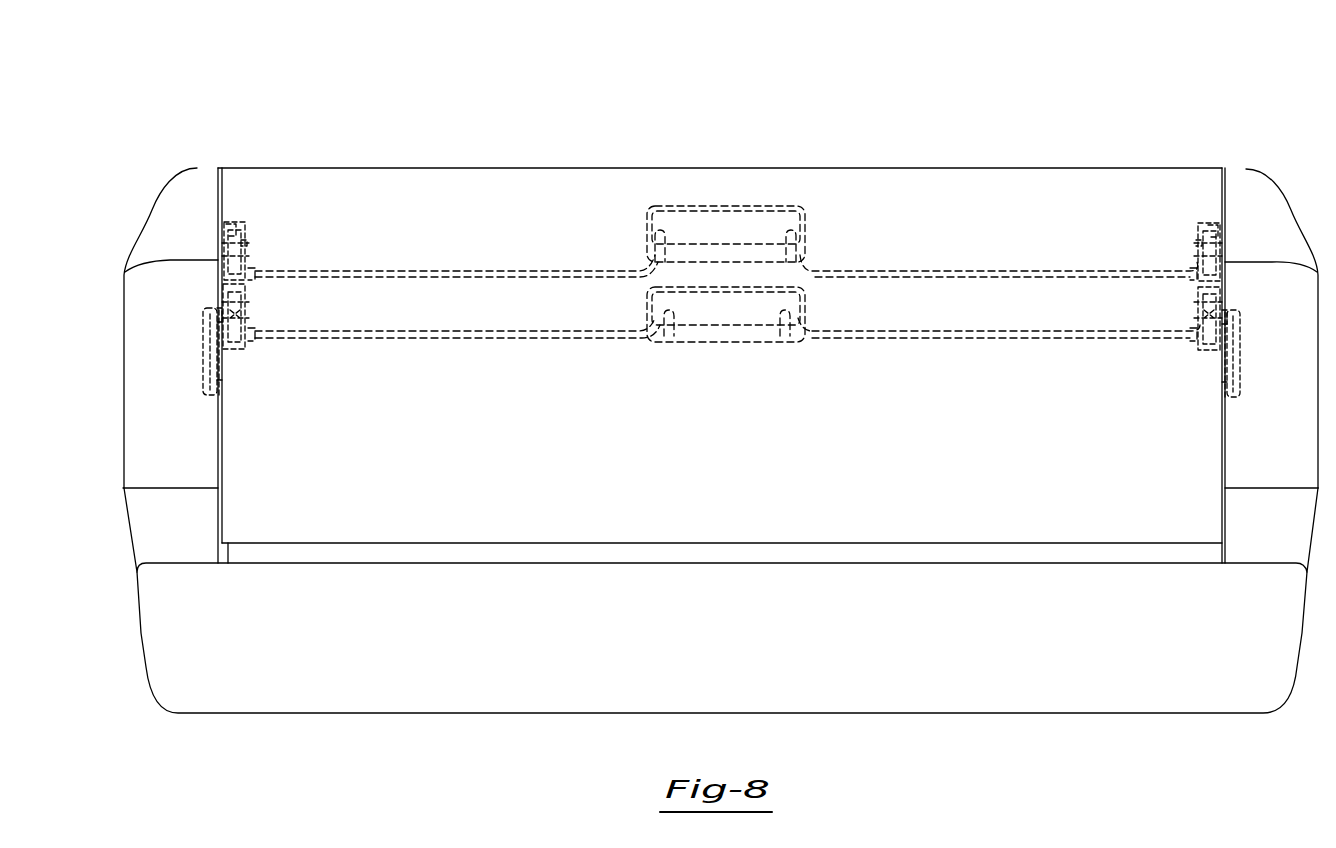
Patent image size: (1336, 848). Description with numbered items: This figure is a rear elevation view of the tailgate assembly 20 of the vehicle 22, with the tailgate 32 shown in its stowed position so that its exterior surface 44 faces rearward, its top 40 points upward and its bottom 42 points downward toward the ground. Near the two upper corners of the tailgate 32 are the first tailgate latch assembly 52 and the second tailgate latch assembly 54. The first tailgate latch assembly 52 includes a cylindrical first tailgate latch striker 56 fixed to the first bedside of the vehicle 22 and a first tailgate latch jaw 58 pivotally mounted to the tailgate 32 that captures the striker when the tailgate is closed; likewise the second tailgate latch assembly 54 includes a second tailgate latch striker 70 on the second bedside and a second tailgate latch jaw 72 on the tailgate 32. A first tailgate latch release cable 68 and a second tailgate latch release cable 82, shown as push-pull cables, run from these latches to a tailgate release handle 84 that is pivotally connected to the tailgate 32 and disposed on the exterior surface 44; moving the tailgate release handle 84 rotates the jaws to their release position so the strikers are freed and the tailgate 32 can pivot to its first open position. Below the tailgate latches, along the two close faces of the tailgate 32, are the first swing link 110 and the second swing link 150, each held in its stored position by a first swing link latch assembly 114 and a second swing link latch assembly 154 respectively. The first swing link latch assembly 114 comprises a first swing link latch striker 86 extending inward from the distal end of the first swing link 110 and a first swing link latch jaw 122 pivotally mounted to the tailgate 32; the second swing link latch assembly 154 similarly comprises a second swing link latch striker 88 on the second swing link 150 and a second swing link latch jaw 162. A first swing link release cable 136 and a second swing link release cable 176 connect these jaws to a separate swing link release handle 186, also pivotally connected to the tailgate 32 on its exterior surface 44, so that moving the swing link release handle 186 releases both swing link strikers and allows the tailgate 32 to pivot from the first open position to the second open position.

The tailgate assembly 20 is at (177, 112).
The vehicle 22 is at (905, 685).
The tailgate 32 is at (1052, 494).
The top 40 is at (1036, 165).
The bottom 42 is at (458, 548).
The exterior surface 44 is at (765, 505).
The first tailgate latch assembly 52 is at (210, 232).
The second tailgate latch assembly 54 is at (1236, 232).
The first tailgate latch striker 56 is at (250, 245).
The first tailgate latch jaw 58 is at (230, 222).
The first tailgate latch release cable 68 is at (470, 268).
The second tailgate latch striker 70 is at (1190, 245).
The second tailgate latch jaw 72 is at (1210, 224).
The second tailgate latch release cable 82 is at (932, 270).
The tailgate release handle 84 is at (725, 232).
The first swing link latch striker 86 is at (250, 317).
The second swing link latch striker 88 is at (1195, 318).
The first swing link 110 is at (202, 358).
The first swing link latch assembly 114 is at (257, 366).
The first swing link latch jaw 122 is at (222, 295).
The first swing link release cable 136 is at (460, 342).
The second swing link 150 is at (1240, 360).
The second swing link latch assembly 154 is at (1178, 366).
The second swing link latch jaw 162 is at (1225, 302).
The second swing link release cable 176 is at (978, 342).
The swing link release handle 186 is at (706, 312).